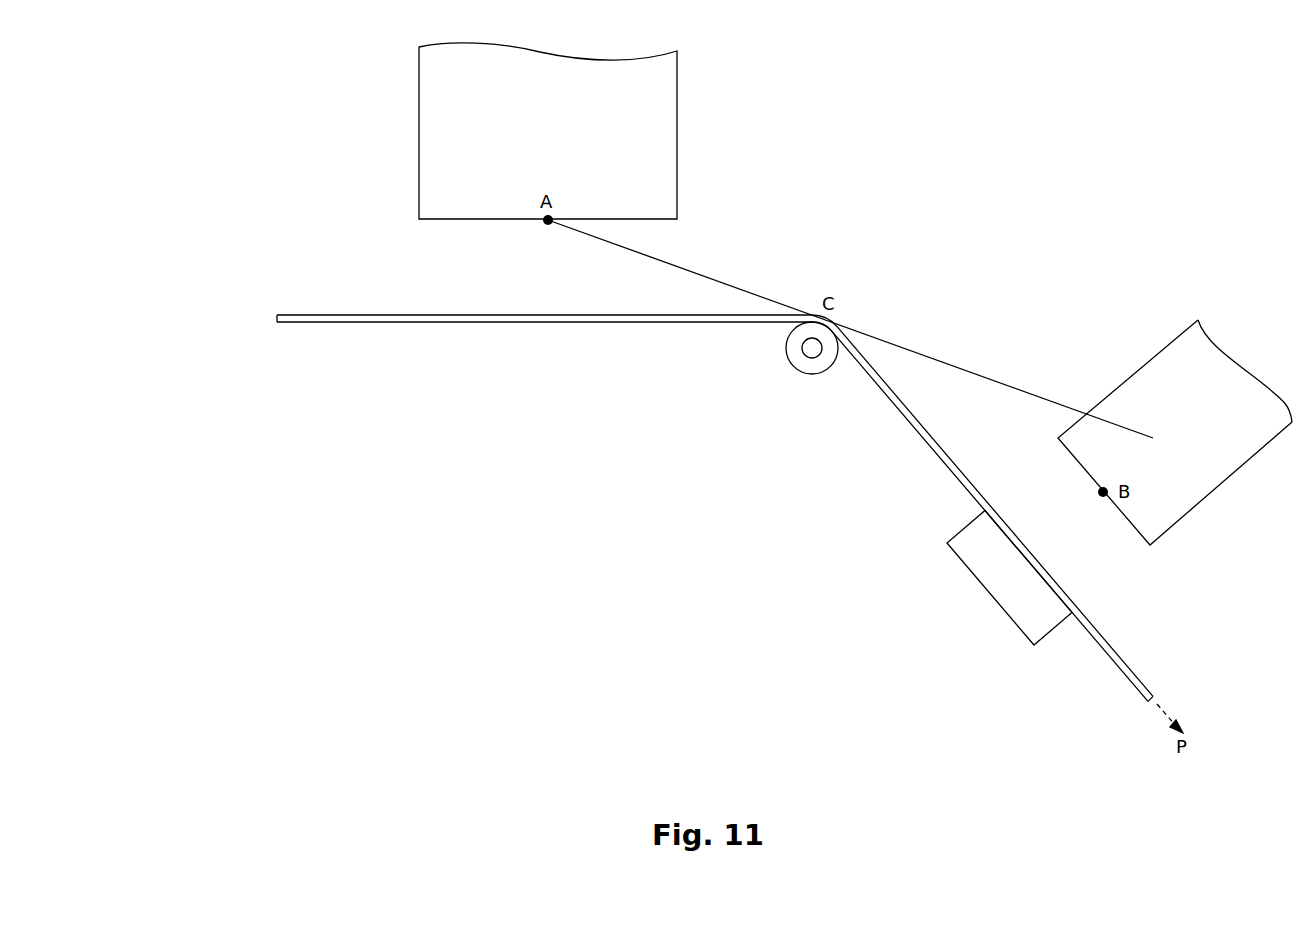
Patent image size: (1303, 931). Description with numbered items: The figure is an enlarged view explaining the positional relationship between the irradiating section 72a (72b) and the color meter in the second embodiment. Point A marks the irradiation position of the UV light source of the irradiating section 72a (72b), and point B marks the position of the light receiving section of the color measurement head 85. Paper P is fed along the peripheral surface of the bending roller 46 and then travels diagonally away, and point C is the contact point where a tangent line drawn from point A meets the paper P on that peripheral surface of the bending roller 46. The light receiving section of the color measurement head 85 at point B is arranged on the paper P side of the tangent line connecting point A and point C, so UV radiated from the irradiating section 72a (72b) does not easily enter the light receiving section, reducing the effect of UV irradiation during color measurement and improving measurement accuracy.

The irradiating section 72a is at (630, 131).
The irradiating section 72b is at (677, 133).
The bending roller 46 is at (812, 375).
The color measurement head 85 is at (1223, 483).